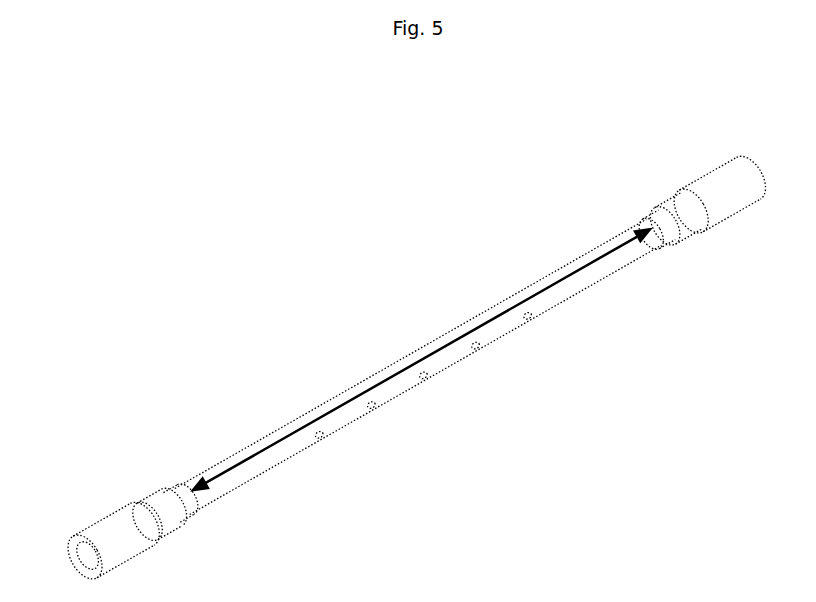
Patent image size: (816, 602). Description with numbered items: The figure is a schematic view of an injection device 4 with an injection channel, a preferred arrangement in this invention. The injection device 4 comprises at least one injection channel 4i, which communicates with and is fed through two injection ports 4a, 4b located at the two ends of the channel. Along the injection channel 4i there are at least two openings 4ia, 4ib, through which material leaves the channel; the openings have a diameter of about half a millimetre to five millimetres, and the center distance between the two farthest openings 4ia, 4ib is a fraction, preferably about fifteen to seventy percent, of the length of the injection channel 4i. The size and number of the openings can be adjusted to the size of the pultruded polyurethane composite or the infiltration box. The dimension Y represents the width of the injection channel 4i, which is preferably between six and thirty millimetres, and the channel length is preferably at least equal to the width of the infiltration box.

The injection device 4 is at (198, 342).
The injection port 4a is at (68, 527).
The injection port 4b is at (749, 149).
The injection channel 4i is at (371, 356).
The opening on the injection channel 4ia is at (327, 459).
The opening on the injection channel 4ib is at (543, 330).
The width of the injection channel Y is at (552, 265).